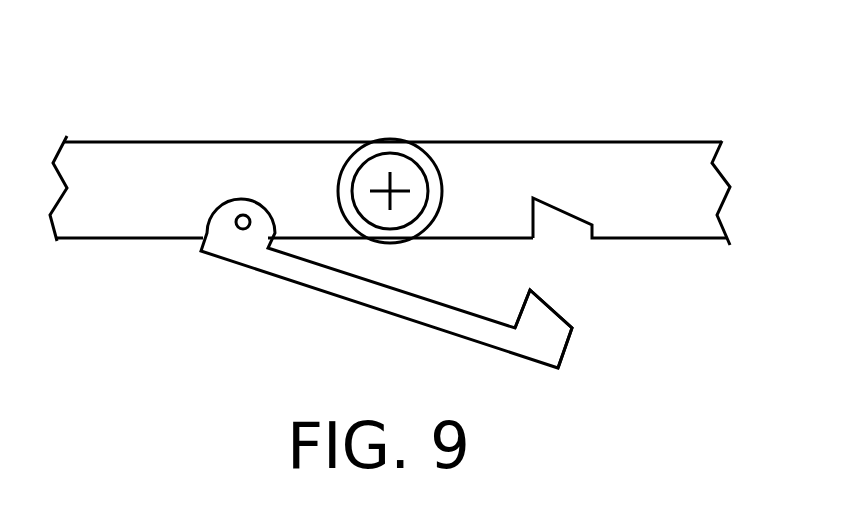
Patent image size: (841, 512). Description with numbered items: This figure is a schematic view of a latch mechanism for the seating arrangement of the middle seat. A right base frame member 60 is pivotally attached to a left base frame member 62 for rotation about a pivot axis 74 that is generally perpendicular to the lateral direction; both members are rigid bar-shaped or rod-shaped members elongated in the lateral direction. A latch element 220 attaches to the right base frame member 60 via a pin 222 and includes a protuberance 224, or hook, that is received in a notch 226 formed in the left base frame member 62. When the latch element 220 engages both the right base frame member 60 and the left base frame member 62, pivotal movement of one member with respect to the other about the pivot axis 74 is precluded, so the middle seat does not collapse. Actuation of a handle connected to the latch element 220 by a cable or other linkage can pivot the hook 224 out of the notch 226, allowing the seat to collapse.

The right base frame member 60 is at (172, 141).
The left base frame member 62 is at (503, 146).
The pivot axis 74 is at (388, 187).
The latch element 220 is at (385, 302).
The pin 222 is at (242, 229).
The protuberance 224 is at (543, 317).
The notch 226 is at (553, 217).